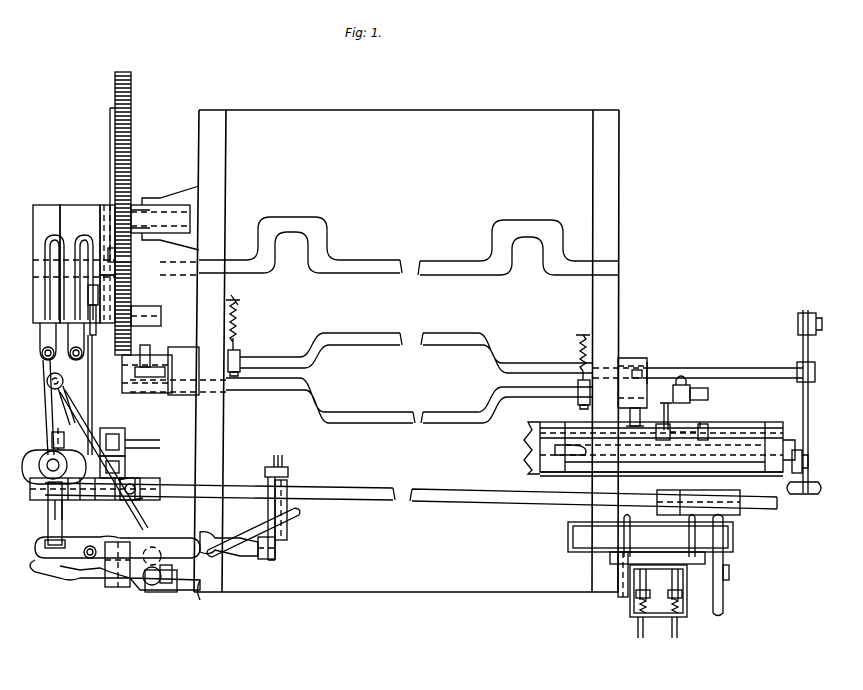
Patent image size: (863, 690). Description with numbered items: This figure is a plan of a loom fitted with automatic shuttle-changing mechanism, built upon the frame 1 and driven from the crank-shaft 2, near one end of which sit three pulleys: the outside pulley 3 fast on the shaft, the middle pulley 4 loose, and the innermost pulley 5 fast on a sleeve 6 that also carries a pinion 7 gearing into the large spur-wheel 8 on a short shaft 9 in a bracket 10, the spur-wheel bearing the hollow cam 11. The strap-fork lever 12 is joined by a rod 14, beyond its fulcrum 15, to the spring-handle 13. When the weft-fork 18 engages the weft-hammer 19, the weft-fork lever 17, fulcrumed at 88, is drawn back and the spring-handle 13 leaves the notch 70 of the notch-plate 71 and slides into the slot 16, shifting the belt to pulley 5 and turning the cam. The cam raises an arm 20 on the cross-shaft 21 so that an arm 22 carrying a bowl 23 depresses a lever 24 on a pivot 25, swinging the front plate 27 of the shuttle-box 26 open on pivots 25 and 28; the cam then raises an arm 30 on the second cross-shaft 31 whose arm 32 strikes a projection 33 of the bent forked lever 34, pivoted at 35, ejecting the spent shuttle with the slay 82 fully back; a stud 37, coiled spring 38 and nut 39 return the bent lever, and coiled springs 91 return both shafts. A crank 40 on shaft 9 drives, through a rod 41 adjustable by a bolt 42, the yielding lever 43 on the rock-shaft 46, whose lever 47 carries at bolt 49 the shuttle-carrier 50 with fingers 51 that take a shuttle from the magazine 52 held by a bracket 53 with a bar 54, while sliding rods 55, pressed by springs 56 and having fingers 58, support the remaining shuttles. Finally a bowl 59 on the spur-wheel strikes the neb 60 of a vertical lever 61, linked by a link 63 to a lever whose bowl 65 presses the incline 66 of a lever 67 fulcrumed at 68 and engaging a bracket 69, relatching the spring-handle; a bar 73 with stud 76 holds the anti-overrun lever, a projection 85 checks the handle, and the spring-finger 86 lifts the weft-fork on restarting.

The frame 1 is at (406, 351).
The crank-shaft 2 is at (318, 233).
The outside pulley 3 is at (42, 212).
The middle pulley 4 is at (68, 212).
The innermost pulley 5 is at (96, 212).
The sleeve 6 is at (97, 256).
The pinion 7 is at (131, 256).
The large spur-wheel 8 is at (131, 130).
The short shaft 9 is at (160, 219).
The bracket 10 is at (165, 197).
The hollow cam 11 is at (110, 118).
The strap-fork lever 12 is at (40, 330).
The spring-handle 13 is at (152, 585).
The rod 14 is at (47, 381).
The fulcrum 15 is at (40, 470).
The longitudinal slot 16 is at (172, 588).
The weft-fork lever 17 is at (248, 558).
The weft-fork 18 is at (288, 470).
The weft-hammer 19 is at (287, 530).
The arm 20 is at (131, 292).
The cross-shaft 21 is at (248, 352).
The arm 22 is at (805, 312).
The bowl 23 is at (798, 326).
The lever 24 is at (707, 402).
The pivot 25 is at (796, 442).
The shuttle-box 26 is at (745, 448).
The front plate 27 is at (570, 476).
The pivot 28 is at (563, 457).
The arm 30 is at (80, 386).
The second cross-shaft 31 is at (312, 386).
The arm 32 is at (690, 388).
The projection 33 is at (708, 396).
The bent forked lever 34 is at (670, 415).
The pivot 35 is at (700, 426).
The stud 37 is at (655, 382).
The coiled spring 38 is at (642, 415).
The nut 39 is at (640, 372).
The crank 40 is at (78, 215).
The rod 41 is at (73, 424).
The bolt 42 is at (52, 443).
The lever 43 is at (48, 535).
The rock-shaft 46 is at (352, 492).
The lever 47 is at (723, 525).
The bolt 49 is at (729, 572).
The shuttle-carrier 50 is at (705, 560).
The fingers 51 is at (630, 535).
The magazine 52 is at (568, 536).
The bracket 53 is at (618, 560).
The bar 54 is at (630, 608).
The sliding rods 55 is at (638, 632).
The springs 56 is at (659, 601).
The projecting fingers 58 is at (646, 570).
The bowl 59 is at (158, 306).
The neb 60 is at (160, 344).
The vertical lever 61 is at (148, 360).
The link 63 is at (160, 400).
The bowl 65 is at (133, 478).
The incline 66 is at (143, 515).
The lever 67 is at (92, 508).
The fulcrum 68 is at (133, 428).
The bracket 69 is at (100, 578).
The notch 70 is at (148, 565).
The notch-plate 71 is at (60, 590).
The bar 73 is at (92, 400).
The stud 76 is at (108, 290).
The slay 82 is at (522, 448).
The projection 85 is at (166, 583).
The spring-finger 86 is at (225, 535).
The fulcrum 88 is at (45, 556).
The coiled springs 91 is at (240, 325).